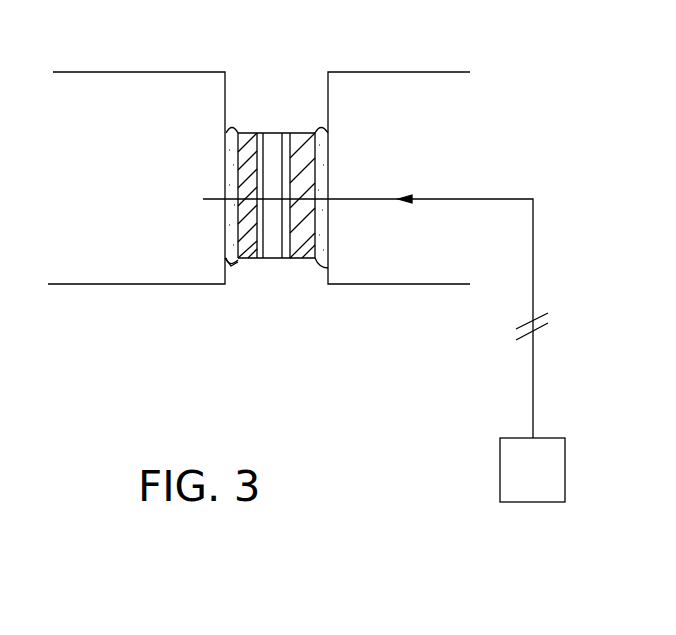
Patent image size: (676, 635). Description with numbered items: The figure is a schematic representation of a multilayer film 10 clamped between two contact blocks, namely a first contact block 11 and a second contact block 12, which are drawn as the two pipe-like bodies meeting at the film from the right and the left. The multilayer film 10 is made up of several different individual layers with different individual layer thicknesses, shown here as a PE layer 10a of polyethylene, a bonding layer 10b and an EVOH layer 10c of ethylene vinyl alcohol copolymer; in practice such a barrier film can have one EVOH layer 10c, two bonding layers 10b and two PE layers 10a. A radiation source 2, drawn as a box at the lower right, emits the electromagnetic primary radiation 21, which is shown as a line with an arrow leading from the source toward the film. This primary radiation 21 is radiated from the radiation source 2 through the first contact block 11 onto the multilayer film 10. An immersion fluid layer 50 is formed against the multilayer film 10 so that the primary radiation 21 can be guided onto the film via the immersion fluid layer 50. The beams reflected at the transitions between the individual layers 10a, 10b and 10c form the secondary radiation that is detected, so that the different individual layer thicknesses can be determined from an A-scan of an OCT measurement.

The radiation source 2 is at (565, 463).
The multilayer film 10 is at (285, 258).
The PE layer 10a is at (242, 133).
The bonding layer 10b is at (260, 133).
The EVOH layer 10c is at (277, 133).
The first contact block 11 is at (375, 284).
The second contact block 12 is at (132, 284).
The primary radiation 21 is at (497, 199).
The immersion fluid layer 50 is at (235, 265).